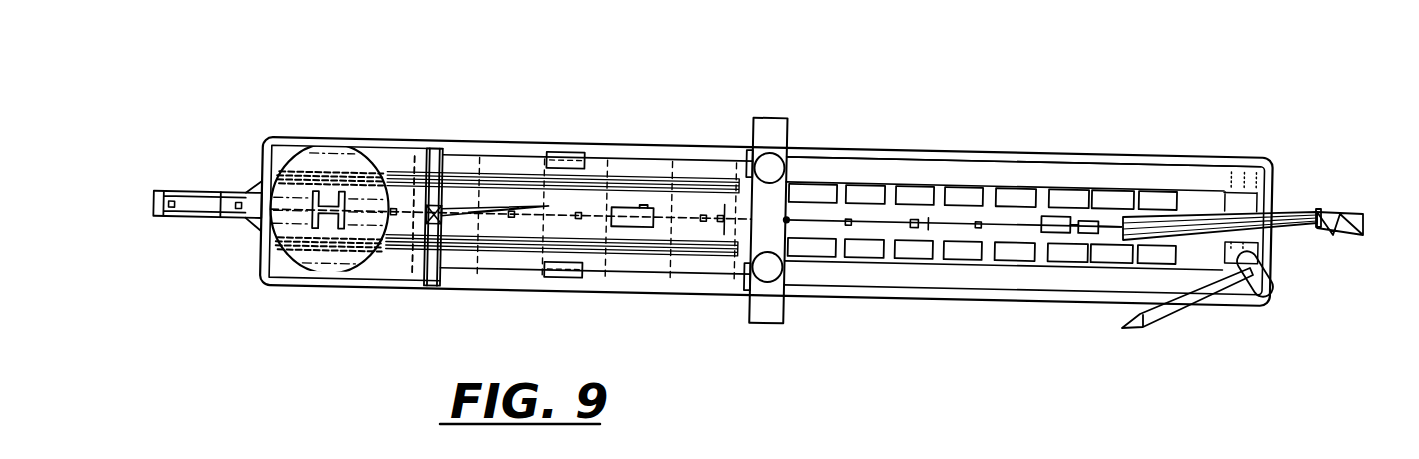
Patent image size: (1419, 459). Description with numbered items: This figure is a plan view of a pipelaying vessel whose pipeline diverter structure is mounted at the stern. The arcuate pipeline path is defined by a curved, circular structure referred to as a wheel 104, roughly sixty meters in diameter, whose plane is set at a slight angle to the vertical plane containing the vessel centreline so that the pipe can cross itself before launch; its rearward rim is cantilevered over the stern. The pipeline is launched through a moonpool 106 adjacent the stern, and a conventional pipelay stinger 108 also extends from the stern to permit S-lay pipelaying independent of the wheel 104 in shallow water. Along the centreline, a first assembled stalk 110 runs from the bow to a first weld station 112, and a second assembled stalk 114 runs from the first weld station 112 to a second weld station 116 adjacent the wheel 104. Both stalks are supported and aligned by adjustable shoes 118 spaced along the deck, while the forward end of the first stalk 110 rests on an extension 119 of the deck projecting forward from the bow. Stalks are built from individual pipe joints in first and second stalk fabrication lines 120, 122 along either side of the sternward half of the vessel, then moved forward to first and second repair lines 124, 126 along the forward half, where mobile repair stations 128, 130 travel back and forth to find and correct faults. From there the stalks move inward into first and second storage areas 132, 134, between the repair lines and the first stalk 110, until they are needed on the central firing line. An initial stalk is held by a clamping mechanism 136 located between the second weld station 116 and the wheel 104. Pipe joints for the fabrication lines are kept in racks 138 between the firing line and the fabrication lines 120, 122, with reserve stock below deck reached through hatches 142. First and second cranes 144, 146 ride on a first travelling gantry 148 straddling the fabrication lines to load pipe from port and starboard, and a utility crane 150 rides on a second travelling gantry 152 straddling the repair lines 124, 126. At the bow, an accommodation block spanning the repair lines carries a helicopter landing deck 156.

The wheel 104 is at (1290, 207).
The moonpool 106 is at (1200, 243).
The pipelay stinger 108 is at (1347, 240).
The first assembled stalk 110 is at (402, 170).
The first weld station 112 is at (637, 207).
The second assembled stalk 114 is at (690, 212).
The second weld station 116 is at (1055, 220).
The adjustable shoes 118 is at (240, 205).
The extension of the deck 119 is at (151, 208).
The first stalk fabrication line 120 is at (978, 168).
The second stalk fabrication line 122 is at (962, 197).
The first repair line 124 is at (720, 162).
The second repair line 126 is at (713, 277).
The mobile repair station 128 is at (570, 152).
The mobile repair station 130 is at (572, 277).
The first storage area 132 is at (424, 148).
The second storage area 134 is at (402, 250).
The clamping mechanism 136 is at (1078, 232).
The racks 138 is at (1160, 193).
The hatches 142 is at (808, 190).
The first crane 144 is at (770, 165).
The second crane 146 is at (772, 273).
The first travelling gantry 148 is at (760, 307).
The utility crane 150 is at (455, 212).
The second travelling gantry 152 is at (455, 160).
The helicopter landing deck 156 is at (320, 257).